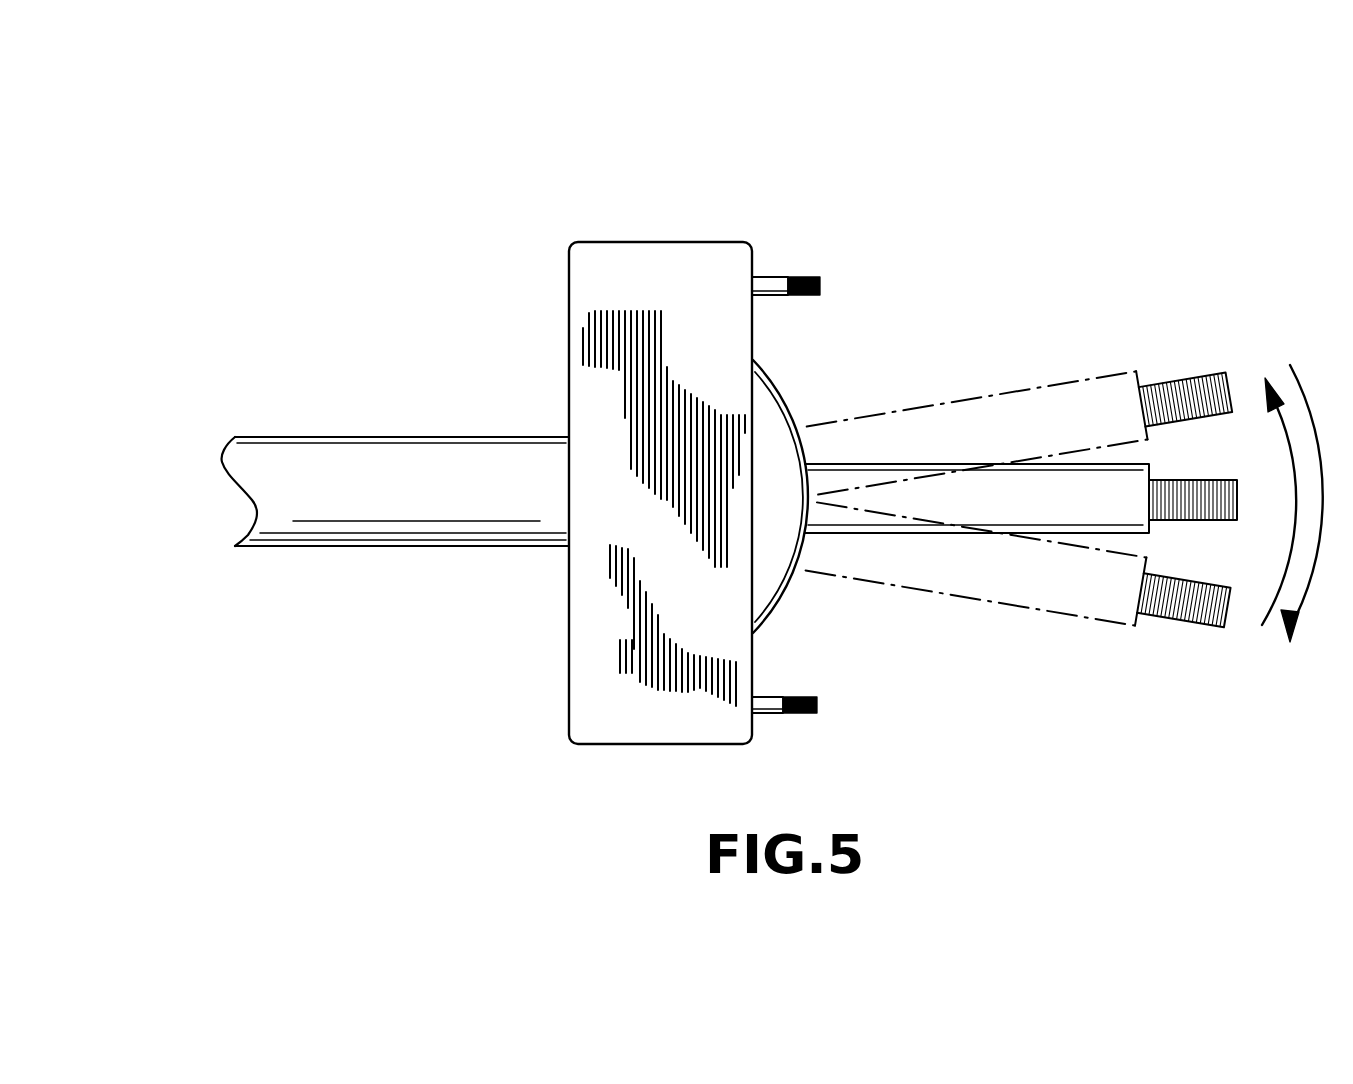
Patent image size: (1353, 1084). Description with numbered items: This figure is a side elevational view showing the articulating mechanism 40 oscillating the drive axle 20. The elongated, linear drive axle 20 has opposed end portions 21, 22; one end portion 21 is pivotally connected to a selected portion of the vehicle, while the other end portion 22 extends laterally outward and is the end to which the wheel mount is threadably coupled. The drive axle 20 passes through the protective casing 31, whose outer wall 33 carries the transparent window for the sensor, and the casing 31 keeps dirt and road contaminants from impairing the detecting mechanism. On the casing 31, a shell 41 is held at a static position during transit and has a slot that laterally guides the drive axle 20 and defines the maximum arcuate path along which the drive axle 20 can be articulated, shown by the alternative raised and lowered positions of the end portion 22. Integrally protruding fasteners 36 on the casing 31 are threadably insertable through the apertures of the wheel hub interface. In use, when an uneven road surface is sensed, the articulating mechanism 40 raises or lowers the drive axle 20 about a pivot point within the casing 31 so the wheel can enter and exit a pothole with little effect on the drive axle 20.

The articulating mechanism 40 is at (878, 152).
The protective casing 31 is at (633, 242).
The outer wall 33 is at (600, 745).
The drive axle 20 is at (404, 437).
The end portion 21 is at (222, 460).
The integrally protruding fasteners 36 is at (808, 277).
The shell 41 is at (775, 375).
The end portion 22 is at (1185, 480).